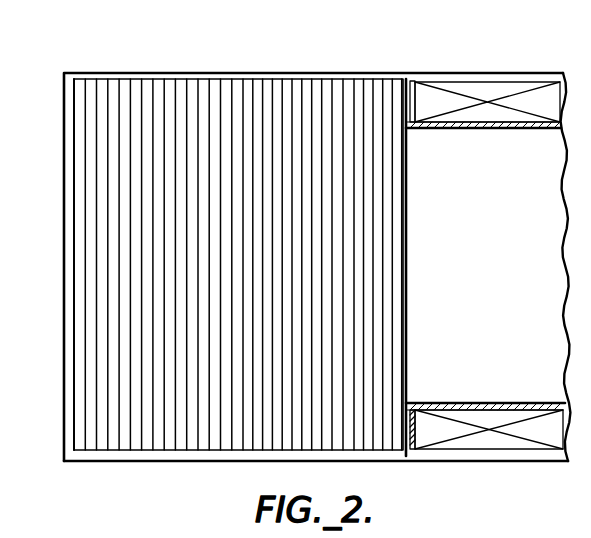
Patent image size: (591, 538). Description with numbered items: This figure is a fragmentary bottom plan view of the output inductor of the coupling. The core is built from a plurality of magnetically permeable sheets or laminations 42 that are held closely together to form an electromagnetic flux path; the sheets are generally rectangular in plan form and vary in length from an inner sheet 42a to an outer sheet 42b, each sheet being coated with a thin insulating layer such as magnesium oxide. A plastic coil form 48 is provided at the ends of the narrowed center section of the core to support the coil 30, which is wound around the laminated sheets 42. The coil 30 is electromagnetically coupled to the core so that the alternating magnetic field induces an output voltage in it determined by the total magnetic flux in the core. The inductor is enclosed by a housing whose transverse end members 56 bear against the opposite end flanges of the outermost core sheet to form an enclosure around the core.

The coil 30 is at (497, 90).
The magnetically permeable sheets or laminations 42 is at (180, 430).
The inner sheet 42a is at (404, 452).
The outer sheet 42b is at (75, 432).
The plastic coil form 48 is at (411, 101).
The transverse end members 56 is at (325, 73).